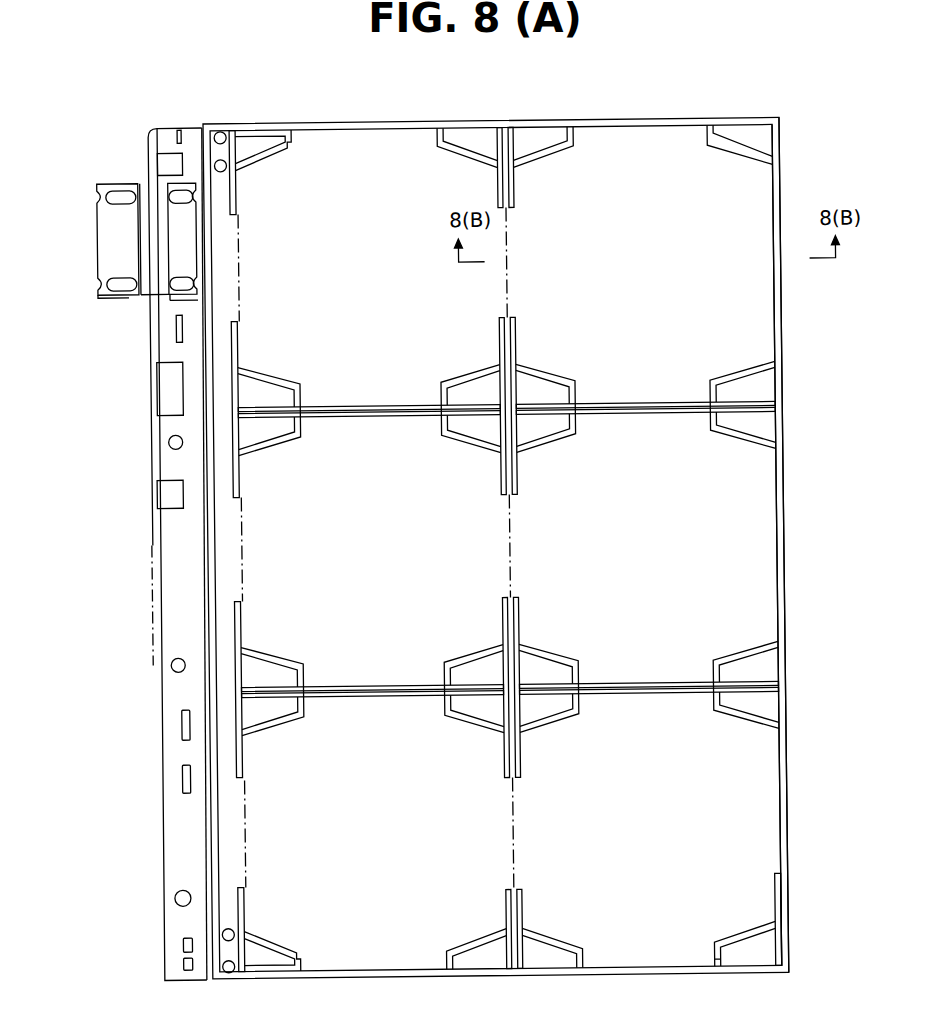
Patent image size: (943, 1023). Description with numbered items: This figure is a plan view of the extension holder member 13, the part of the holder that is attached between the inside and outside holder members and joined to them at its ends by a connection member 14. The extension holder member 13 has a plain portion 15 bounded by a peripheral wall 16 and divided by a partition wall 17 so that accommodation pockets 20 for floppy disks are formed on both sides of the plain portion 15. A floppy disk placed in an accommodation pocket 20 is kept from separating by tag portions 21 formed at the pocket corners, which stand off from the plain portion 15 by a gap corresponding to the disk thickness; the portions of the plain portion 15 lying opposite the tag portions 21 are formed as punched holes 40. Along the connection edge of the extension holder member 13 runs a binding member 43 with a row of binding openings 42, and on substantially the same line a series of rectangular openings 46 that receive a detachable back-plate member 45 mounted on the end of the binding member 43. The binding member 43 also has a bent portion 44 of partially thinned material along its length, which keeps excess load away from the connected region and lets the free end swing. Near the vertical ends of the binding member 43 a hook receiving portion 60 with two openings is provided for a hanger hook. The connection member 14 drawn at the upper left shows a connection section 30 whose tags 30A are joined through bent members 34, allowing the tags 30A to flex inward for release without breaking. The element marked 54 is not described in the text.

The extension holder member 13 is at (616, 125).
The connection member 14 is at (198, 228).
The plain portion 15 is at (367, 664).
The peripheral wall 16 is at (780, 554).
The partition wall 17 is at (513, 338).
The accommodation pocket 20 is at (745, 494).
The tag portion 21 is at (483, 133).
The connection section 30 is at (108, 230).
The tag 30A is at (118, 184).
The bent member 34 is at (104, 195).
The punched hole 40 is at (456, 149).
The binding opening 42 is at (168, 448).
The binding member 43 is at (153, 872).
The bent portion 44 is at (218, 573).
The back-plate member 45 is at (131, 384).
The rectangular opening 46 is at (175, 732).
The tab 54 is at (167, 155).
The hook receiving portion 60 is at (226, 163).